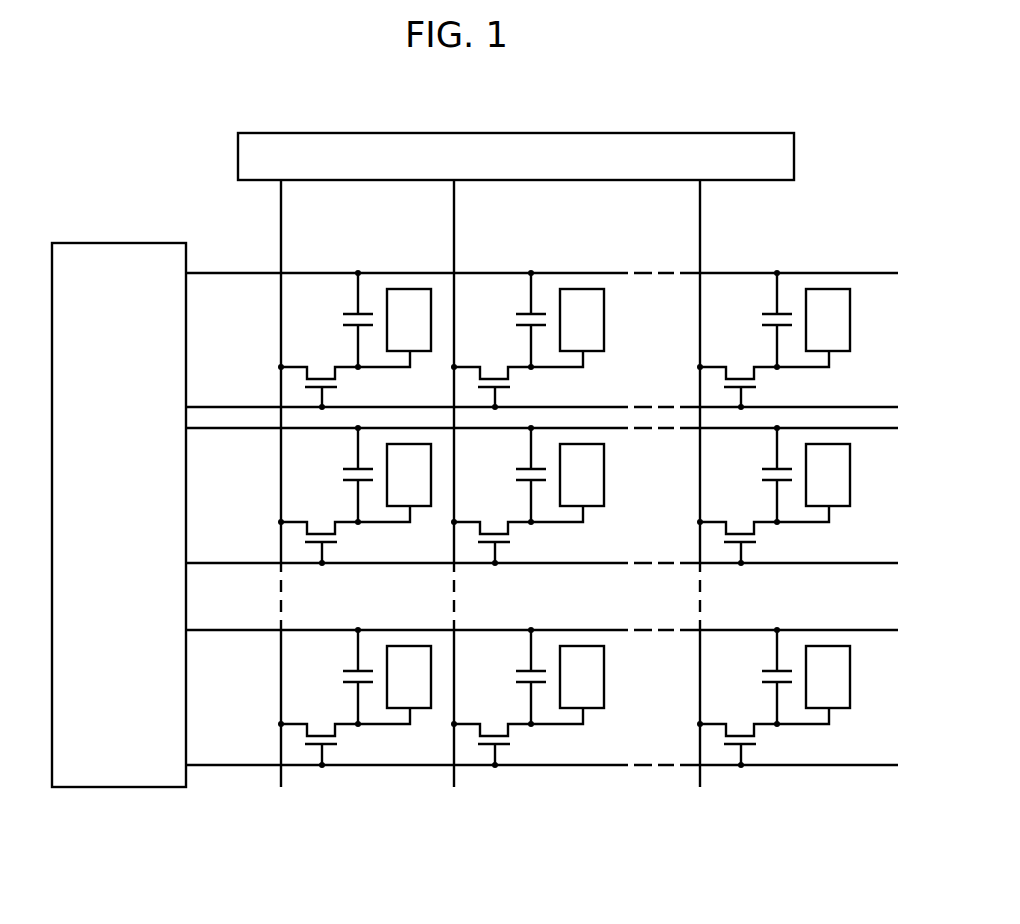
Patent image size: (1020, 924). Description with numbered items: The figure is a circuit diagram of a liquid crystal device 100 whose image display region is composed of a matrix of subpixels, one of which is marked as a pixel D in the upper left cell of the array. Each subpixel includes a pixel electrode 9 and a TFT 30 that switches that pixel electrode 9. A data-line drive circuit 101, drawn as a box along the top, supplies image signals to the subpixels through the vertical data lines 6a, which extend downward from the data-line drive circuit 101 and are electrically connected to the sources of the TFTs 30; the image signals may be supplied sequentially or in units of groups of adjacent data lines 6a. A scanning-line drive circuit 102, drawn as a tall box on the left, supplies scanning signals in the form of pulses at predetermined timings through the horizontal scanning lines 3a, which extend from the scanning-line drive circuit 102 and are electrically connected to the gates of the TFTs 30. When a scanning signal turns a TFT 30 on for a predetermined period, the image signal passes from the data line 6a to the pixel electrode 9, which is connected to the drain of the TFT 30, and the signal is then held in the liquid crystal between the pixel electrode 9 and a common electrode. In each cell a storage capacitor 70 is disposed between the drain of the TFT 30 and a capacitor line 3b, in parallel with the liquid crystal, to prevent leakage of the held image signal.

The liquid crystal device 100 is at (862, 222).
The data-line drive circuit 101 is at (238, 157).
The scanning-line drive circuit 102 is at (122, 243).
The scanning line 3a is at (268, 763).
The capacitor line 3b is at (268, 632).
The data line 6a is at (738, 237).
The pixel electrode 9 is at (832, 293).
The TFT 30 is at (352, 387).
The storage capacitor 70 is at (333, 320).
The pixel D is at (298, 334).